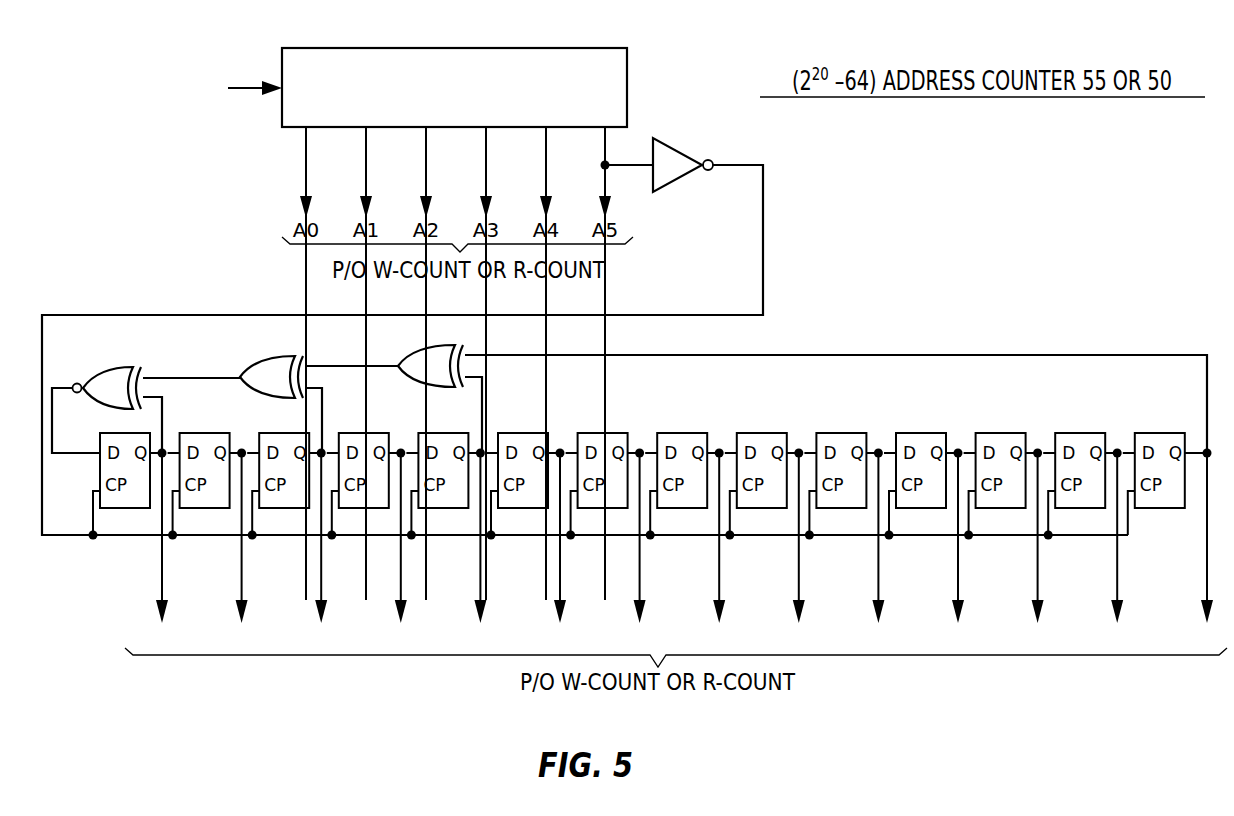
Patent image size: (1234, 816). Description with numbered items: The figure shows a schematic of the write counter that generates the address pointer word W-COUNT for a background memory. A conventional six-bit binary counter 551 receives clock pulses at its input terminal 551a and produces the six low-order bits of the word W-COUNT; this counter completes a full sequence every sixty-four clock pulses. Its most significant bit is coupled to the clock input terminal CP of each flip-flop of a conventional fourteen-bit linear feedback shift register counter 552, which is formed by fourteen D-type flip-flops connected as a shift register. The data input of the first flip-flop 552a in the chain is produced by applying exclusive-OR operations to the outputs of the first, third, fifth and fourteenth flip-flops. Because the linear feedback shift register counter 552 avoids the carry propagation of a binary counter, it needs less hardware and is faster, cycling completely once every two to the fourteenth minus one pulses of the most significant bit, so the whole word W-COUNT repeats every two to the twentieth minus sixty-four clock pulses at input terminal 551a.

The binary counter 551 is at (627, 77).
The input terminal 551a is at (282, 88).
The linear feedback shift register counter 552 is at (800, 394).
The first flip-flop 552a is at (125, 508).